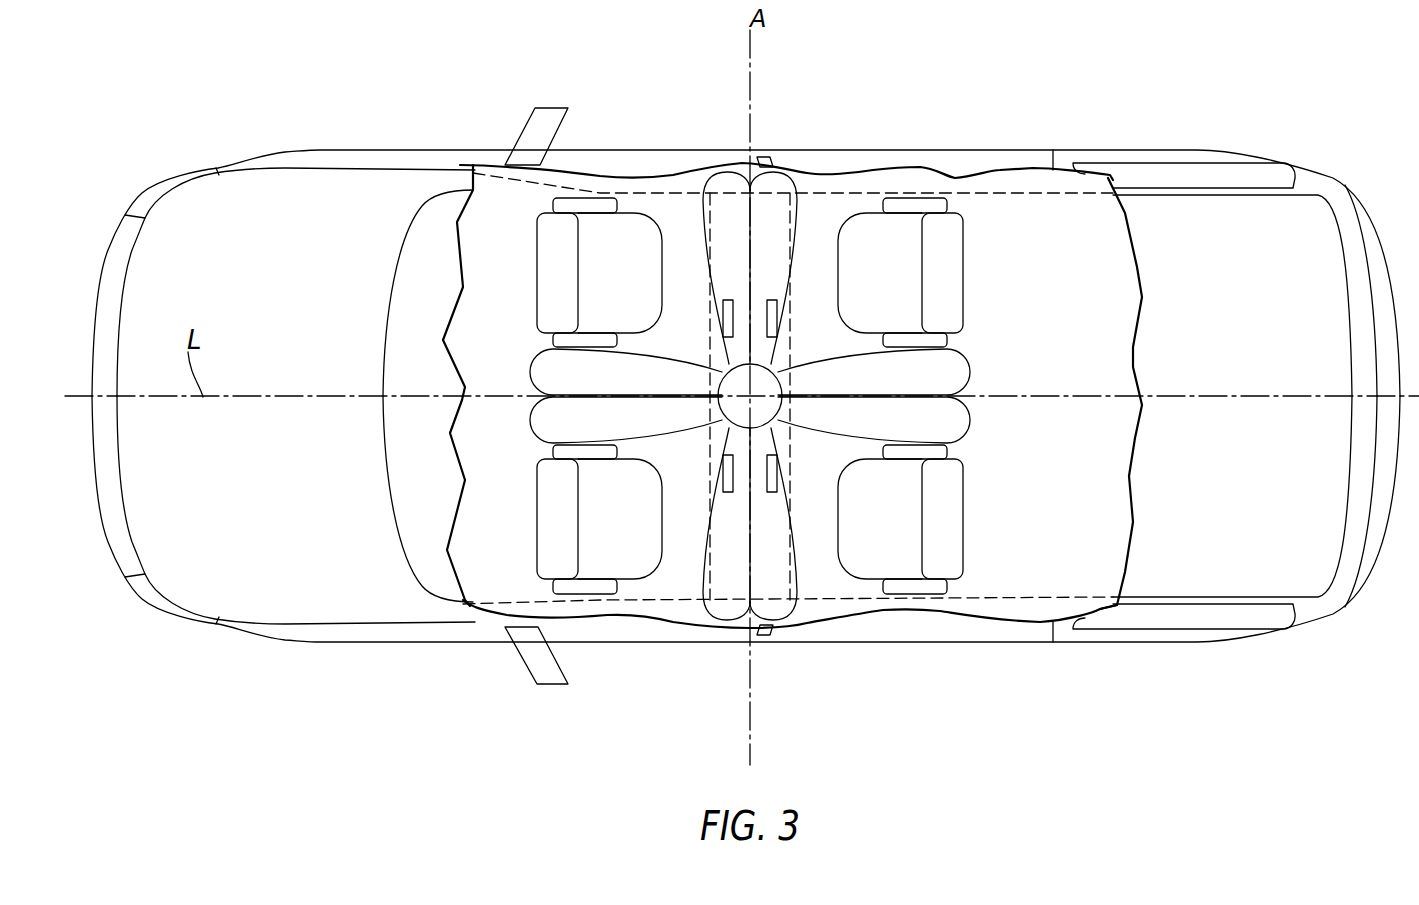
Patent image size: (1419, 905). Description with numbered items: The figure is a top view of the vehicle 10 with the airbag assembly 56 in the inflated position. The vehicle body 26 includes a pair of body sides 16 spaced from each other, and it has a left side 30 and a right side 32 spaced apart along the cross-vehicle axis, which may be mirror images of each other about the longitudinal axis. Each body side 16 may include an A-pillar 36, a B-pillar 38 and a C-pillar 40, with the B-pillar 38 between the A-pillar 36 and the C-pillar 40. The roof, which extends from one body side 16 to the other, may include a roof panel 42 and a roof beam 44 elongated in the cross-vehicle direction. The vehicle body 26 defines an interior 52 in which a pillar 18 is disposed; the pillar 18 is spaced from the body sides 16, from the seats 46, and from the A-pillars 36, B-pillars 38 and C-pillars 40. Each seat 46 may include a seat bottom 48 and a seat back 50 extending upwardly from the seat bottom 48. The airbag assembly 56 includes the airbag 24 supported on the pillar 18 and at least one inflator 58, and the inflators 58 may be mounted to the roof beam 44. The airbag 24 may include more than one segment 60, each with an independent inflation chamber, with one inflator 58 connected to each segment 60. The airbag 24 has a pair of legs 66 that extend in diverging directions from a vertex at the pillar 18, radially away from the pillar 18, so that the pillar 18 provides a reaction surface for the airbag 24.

The vehicle 10 is at (360, 118).
The body sides 16 is at (747, 155).
The pillar 18 is at (780, 377).
The airbag 24 is at (787, 293).
The vehicle body 26 is at (1083, 150).
The left side 30 is at (248, 545).
The right side 32 is at (248, 247).
The A-pillar 36 is at (473, 163).
The B-pillar 38 is at (777, 160).
The C-pillar 40 is at (1062, 162).
The roof panel 42 is at (707, 290).
The roof beam 44 is at (685, 327).
The seat 46 is at (530, 260).
The seat bottom 48 is at (630, 212).
The seat back 50 is at (537, 298).
The interior 52 is at (810, 552).
The airbag assembly 56 is at (813, 242).
The inflator 58 is at (725, 327).
The segment 60 is at (528, 372).
The legs 66 is at (770, 233).